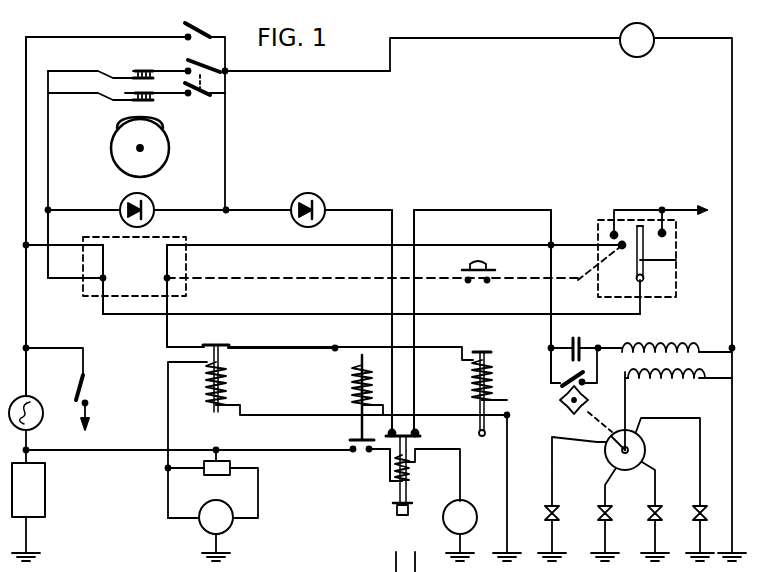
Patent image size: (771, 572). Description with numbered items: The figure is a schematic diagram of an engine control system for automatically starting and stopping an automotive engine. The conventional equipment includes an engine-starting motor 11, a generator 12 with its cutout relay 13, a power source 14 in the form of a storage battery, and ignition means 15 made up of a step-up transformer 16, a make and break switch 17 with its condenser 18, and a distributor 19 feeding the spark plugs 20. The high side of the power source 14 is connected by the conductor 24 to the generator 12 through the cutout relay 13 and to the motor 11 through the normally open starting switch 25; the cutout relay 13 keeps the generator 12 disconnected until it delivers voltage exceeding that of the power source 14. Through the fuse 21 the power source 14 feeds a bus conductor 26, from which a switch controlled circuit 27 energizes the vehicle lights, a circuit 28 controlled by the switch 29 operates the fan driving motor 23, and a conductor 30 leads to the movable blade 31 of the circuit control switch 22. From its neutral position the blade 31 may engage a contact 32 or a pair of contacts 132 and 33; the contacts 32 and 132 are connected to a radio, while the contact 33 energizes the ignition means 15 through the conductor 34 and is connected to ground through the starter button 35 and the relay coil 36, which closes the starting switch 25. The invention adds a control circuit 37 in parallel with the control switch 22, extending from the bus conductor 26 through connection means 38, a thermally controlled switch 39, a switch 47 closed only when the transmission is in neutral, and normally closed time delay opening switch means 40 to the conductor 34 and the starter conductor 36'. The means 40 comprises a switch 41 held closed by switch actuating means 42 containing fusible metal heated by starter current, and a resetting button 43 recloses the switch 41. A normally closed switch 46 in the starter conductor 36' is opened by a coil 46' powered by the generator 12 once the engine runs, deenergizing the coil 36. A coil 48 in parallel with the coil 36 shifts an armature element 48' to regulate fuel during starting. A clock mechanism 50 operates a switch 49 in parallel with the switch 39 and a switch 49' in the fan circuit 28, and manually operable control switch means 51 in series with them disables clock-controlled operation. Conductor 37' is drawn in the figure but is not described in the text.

The electrical engine-starting motor 11 is at (466, 511).
The generator 12 is at (229, 521).
The cutout relay 13 is at (218, 471).
The power source 14 is at (42, 496).
The engine ignition means 15 is at (552, 388).
The step-up transformer 16 is at (668, 380).
The make and break switch 17 is at (582, 384).
The condenser 18 is at (586, 342).
The distributor 19 is at (640, 447).
The spark plugs 20 is at (546, 523).
The fuse 21 is at (33, 402).
The circuit control switch 22 is at (660, 277).
The fan driving motor 23 is at (637, 50).
The conductor 24 is at (88, 452).
The starting switch 25 is at (362, 452).
The bus conductor 26 is at (28, 336).
The switch controlled circuit 27 is at (88, 403).
The circuit 28 is at (345, 72).
The switch 29 is at (192, 40).
The conductor 30 is at (248, 314).
The movable contact element or blade 31 is at (676, 262).
The contact 32 is at (666, 237).
The contact 132 is at (612, 233).
The contact 33 is at (621, 252).
The conductor 34 is at (551, 300).
The starter button 35 is at (462, 268).
The relay coil 36 is at (353, 397).
The starter conductor 36' is at (281, 339).
The control circuit 37 is at (299, 309).
The conductor 37' is at (324, 258).
The connection means 38 is at (140, 282).
The thermally controlled switch 39 is at (148, 204).
The time delay opening switch means 40 is at (384, 471).
The switch 41 is at (403, 428).
The switch actuating means 42 is at (404, 480).
The resetting button or knob 43 is at (405, 521).
The normally closed switch 46 is at (220, 366).
The solenoid or coil 46' is at (237, 383).
The switch 47 is at (318, 198).
The solenoid or coil 48 is at (464, 391).
The armature element 48' is at (492, 447).
The clock controlled switch 49 is at (119, 110).
The switch 49' is at (118, 60).
The clock mechanism 50 is at (157, 152).
The manually operable control switch means 51 is at (218, 78).